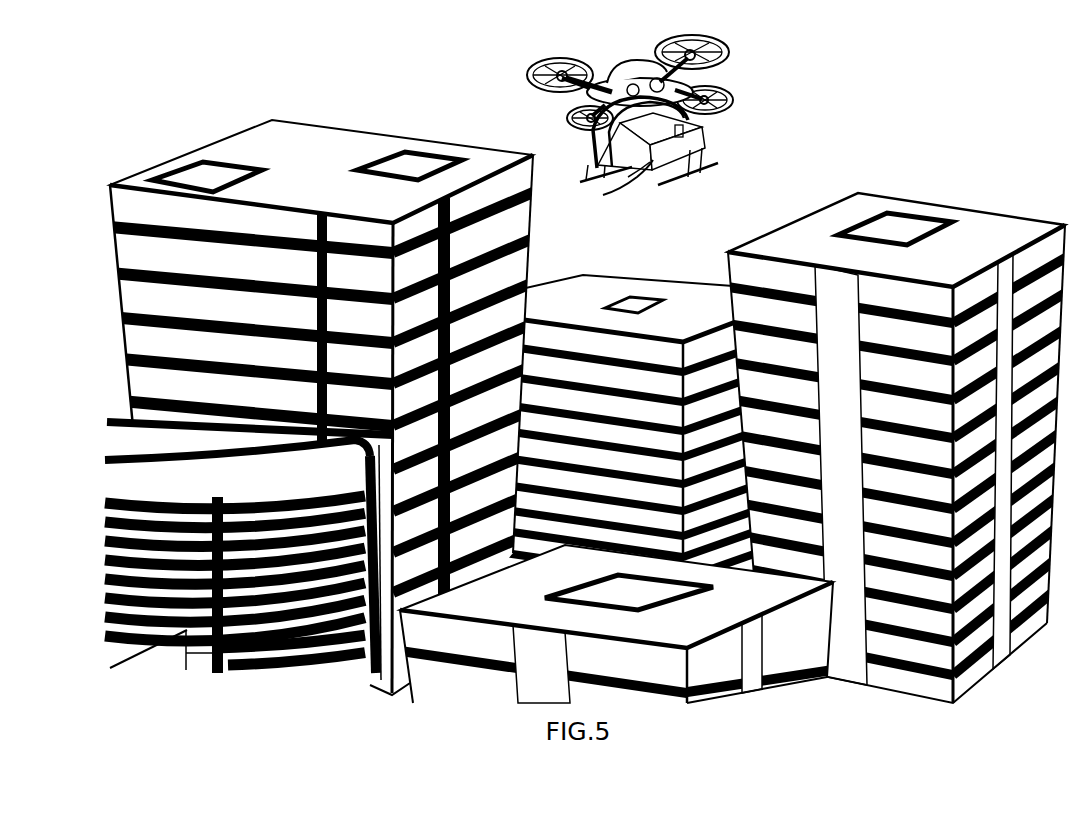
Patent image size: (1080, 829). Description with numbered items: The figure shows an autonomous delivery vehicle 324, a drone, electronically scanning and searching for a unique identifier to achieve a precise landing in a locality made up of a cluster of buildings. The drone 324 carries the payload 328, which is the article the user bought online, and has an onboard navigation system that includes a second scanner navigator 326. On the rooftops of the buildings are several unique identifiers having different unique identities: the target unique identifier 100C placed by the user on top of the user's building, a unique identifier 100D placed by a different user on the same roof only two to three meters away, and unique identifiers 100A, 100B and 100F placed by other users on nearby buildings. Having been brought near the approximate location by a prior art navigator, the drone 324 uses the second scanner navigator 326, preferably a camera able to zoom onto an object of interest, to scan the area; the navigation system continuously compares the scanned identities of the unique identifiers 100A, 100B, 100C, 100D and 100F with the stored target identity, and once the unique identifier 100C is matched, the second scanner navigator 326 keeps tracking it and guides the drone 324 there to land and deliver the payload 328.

The unique identifier 100A is at (713, 588).
The unique identifier 100B is at (893, 218).
The unique identifier 100C is at (320, 378).
The unique identifier 100D is at (223, 170).
The unique identifier 100F is at (642, 298).
The autonomous delivery vehicle 324 is at (630, 120).
The second scanner navigator 326 is at (628, 82).
The payload 328 is at (612, 192).